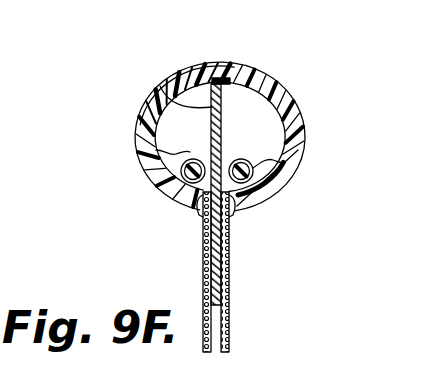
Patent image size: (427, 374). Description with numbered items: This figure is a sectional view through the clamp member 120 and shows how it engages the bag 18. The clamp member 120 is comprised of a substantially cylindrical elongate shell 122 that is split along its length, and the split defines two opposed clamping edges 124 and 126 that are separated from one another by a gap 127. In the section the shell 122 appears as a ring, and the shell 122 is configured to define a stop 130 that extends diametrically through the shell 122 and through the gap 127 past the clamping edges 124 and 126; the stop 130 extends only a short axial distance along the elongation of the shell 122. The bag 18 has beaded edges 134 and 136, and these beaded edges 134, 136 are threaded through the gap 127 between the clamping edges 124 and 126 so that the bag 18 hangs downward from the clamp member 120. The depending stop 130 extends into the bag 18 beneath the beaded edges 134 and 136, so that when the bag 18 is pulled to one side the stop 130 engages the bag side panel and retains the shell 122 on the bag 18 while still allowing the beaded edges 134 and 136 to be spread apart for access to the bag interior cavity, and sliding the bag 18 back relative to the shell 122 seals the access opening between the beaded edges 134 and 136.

The bag 18 is at (243, 318).
The clamp member 120 is at (183, 56).
The elongate shell 122 is at (250, 62).
The clamping edge 124 is at (202, 215).
The clamping edge 126 is at (232, 216).
The gap 127 is at (232, 228).
The stop 130 is at (150, 87).
The beaded edge 134 is at (304, 150).
The beaded edge 136 is at (178, 163).